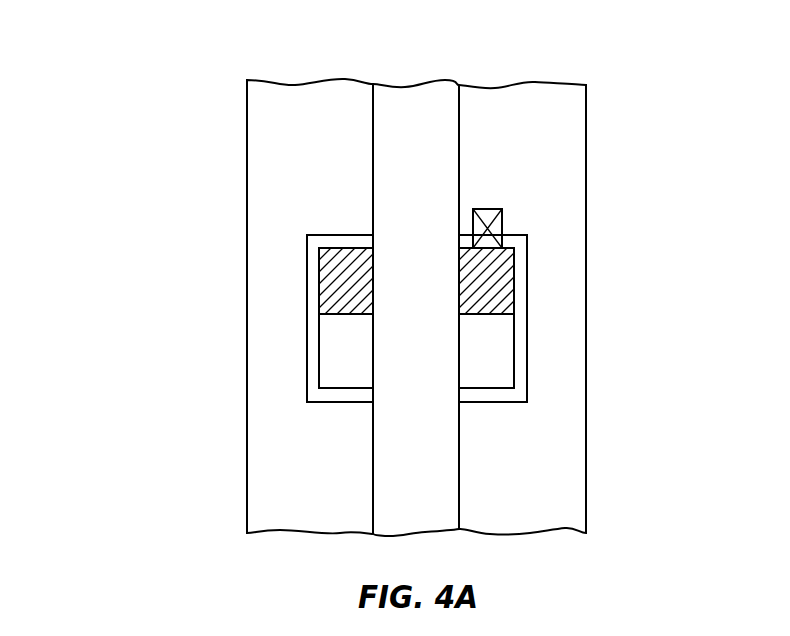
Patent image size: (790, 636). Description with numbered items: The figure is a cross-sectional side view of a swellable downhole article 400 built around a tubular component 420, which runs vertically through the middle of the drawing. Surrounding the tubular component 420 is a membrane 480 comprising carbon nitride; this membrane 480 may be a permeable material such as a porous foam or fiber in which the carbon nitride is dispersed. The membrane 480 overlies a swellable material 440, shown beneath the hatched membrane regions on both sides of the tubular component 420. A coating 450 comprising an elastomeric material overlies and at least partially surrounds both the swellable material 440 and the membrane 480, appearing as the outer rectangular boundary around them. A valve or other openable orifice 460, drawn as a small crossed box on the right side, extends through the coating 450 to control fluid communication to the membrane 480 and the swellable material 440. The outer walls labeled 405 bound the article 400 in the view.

The swellable downhole article 400 is at (172, 130).
The substrate body 405 is at (588, 108).
The tubular component 420 is at (457, 100).
The swellable material 440 is at (497, 352).
The coating 450 is at (520, 380).
The valve or other openable orifice 460 is at (500, 223).
The membrane 480 is at (499, 282).